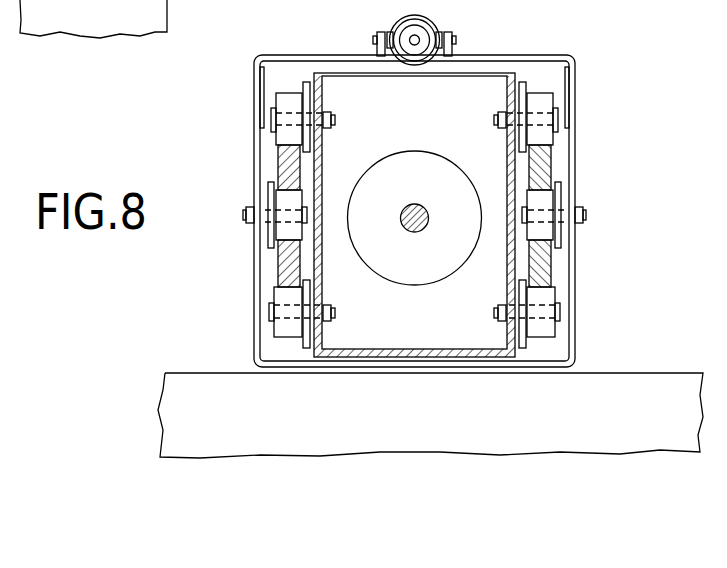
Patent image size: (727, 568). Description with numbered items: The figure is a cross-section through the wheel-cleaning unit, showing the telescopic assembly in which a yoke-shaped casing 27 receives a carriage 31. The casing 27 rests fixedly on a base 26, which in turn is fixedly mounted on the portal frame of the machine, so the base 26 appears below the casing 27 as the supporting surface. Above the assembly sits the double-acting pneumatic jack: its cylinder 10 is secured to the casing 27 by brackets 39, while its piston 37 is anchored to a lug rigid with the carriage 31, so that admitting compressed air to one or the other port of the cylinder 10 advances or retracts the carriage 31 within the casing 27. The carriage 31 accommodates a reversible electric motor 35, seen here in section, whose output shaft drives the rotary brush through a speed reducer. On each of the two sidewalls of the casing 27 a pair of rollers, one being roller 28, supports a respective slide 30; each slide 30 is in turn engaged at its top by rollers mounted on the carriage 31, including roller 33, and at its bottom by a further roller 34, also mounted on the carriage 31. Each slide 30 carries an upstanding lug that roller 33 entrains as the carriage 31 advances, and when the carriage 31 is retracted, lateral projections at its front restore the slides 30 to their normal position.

The cylinder 10 is at (402, 21).
The base 26 is at (168, 12).
The casing 27 is at (572, 297).
The roller 28 is at (287, 231).
The slide 30 is at (284, 168).
The carriage 31 is at (447, 337).
The roller 33 is at (288, 132).
The roller 34 is at (287, 328).
The reversible electric motor 35 is at (435, 178).
The piston 37 is at (432, 24).
The bracket 39 is at (256, 58).